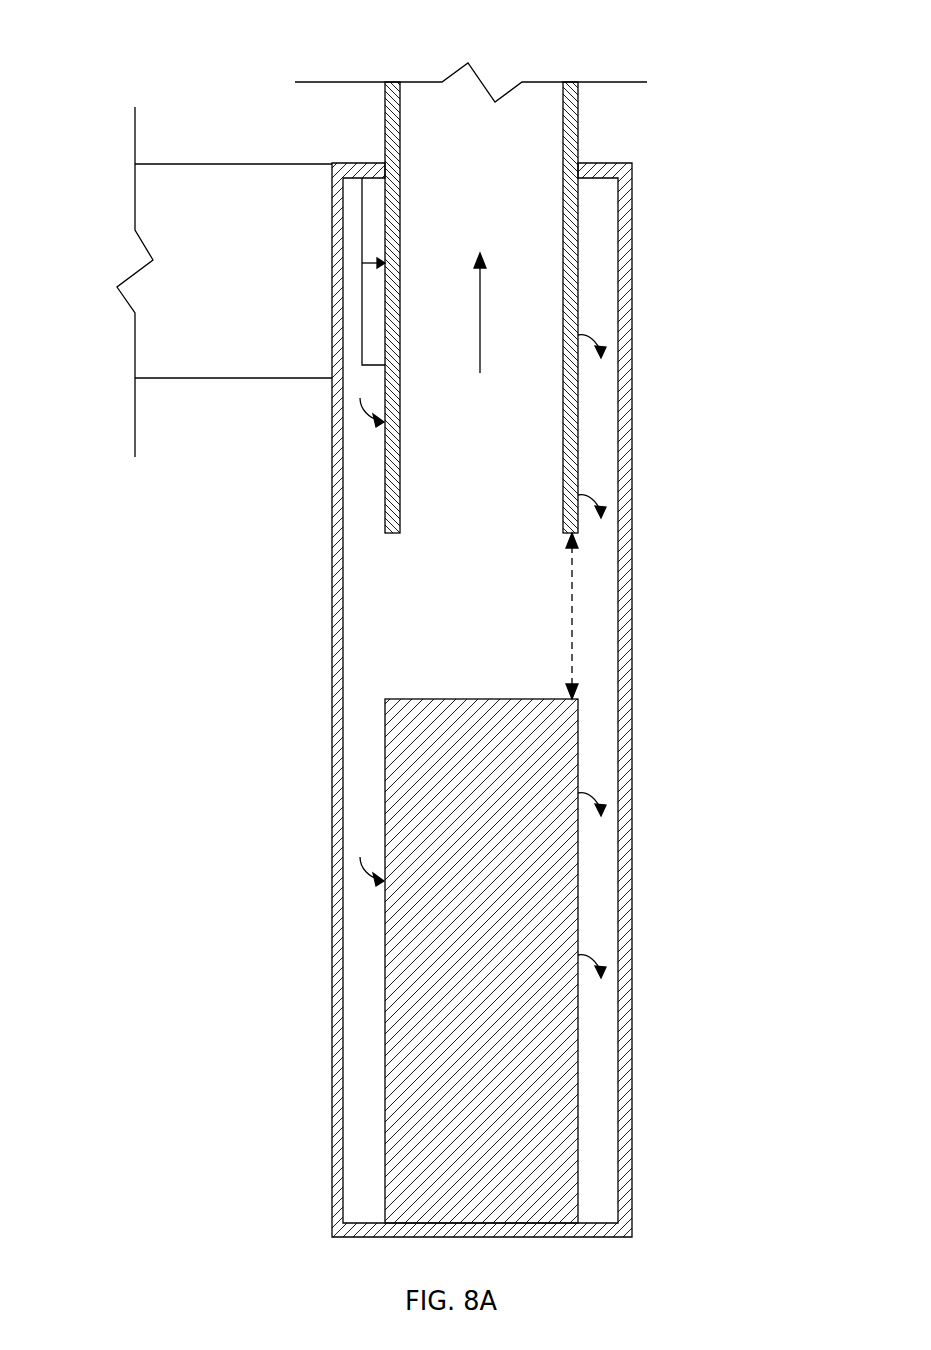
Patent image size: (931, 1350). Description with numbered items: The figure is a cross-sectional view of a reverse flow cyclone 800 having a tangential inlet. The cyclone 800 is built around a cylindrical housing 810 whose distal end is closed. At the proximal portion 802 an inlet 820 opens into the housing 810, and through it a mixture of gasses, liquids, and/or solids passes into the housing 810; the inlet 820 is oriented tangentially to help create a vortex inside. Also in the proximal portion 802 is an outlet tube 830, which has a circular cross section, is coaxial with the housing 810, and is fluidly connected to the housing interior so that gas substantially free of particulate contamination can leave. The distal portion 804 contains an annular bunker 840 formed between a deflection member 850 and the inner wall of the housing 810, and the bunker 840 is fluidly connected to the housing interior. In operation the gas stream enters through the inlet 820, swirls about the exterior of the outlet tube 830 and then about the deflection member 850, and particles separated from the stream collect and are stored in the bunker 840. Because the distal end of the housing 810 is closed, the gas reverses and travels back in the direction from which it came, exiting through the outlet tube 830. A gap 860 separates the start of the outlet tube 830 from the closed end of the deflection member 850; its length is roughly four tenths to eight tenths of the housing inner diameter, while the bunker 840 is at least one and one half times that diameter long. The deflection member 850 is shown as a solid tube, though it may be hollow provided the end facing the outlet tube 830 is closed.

The reverse flow cyclone 800 is at (187, 46).
The proximal portion 802 is at (699, 152).
The distal portion 804 is at (681, 1258).
The cylindrical housing 810 is at (332, 478).
The inlet 820 is at (262, 212).
The outlet tube 830 is at (563, 426).
The annular bunker 840 is at (363, 1070).
The deflection member 850 is at (457, 699).
The gap 860 is at (572, 645).